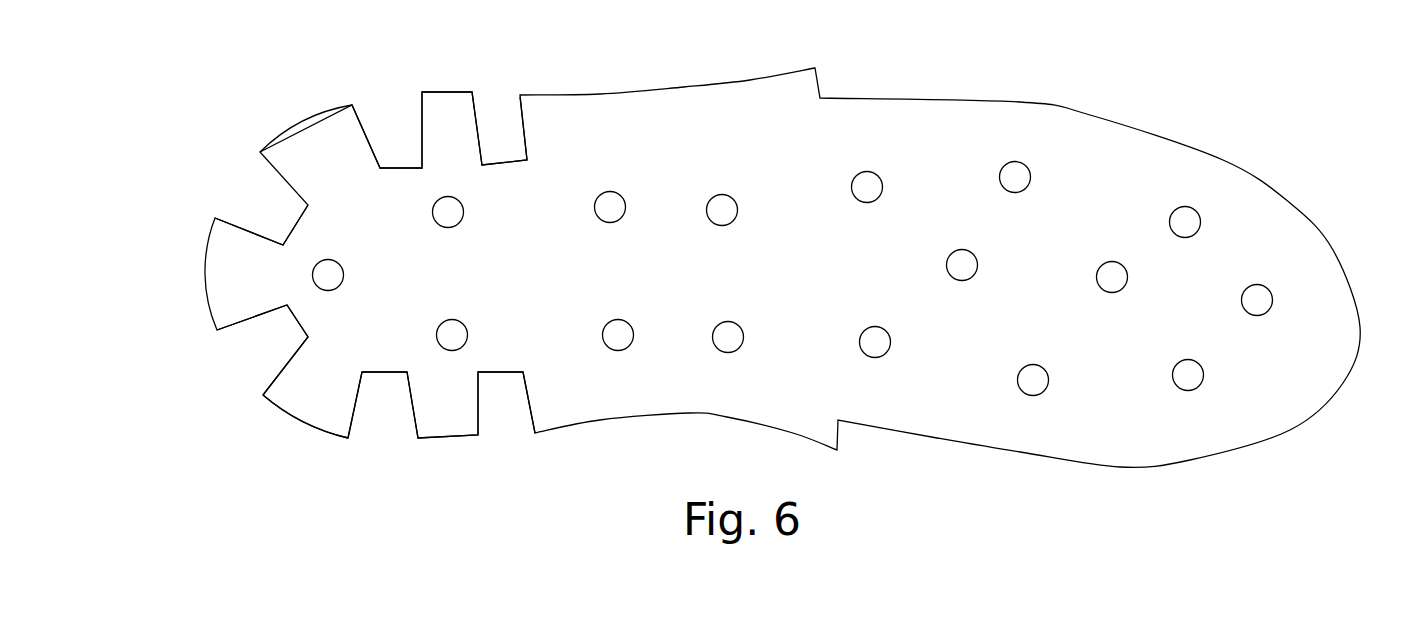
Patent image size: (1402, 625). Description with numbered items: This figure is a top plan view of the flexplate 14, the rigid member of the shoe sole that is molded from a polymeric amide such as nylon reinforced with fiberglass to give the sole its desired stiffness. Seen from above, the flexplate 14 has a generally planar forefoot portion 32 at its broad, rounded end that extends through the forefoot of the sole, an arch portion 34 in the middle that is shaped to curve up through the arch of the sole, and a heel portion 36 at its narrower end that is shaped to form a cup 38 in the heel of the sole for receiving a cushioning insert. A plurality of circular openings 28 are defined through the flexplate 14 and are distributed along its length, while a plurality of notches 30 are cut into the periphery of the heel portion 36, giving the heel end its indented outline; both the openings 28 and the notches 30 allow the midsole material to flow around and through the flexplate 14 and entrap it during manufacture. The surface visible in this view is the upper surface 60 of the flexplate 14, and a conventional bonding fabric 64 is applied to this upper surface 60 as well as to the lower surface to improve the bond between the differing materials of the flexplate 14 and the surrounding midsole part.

The flexplate 14 is at (1297, 166).
The circular openings 28 is at (618, 335).
The notches 30 is at (362, 122).
The forefoot portion 32 is at (1120, 163).
The arch portion 34 is at (672, 128).
The heel portion 36 is at (362, 315).
The cup 38 is at (395, 250).
The upper surface 60 is at (933, 197).
The bonding fabric 64 is at (818, 270).